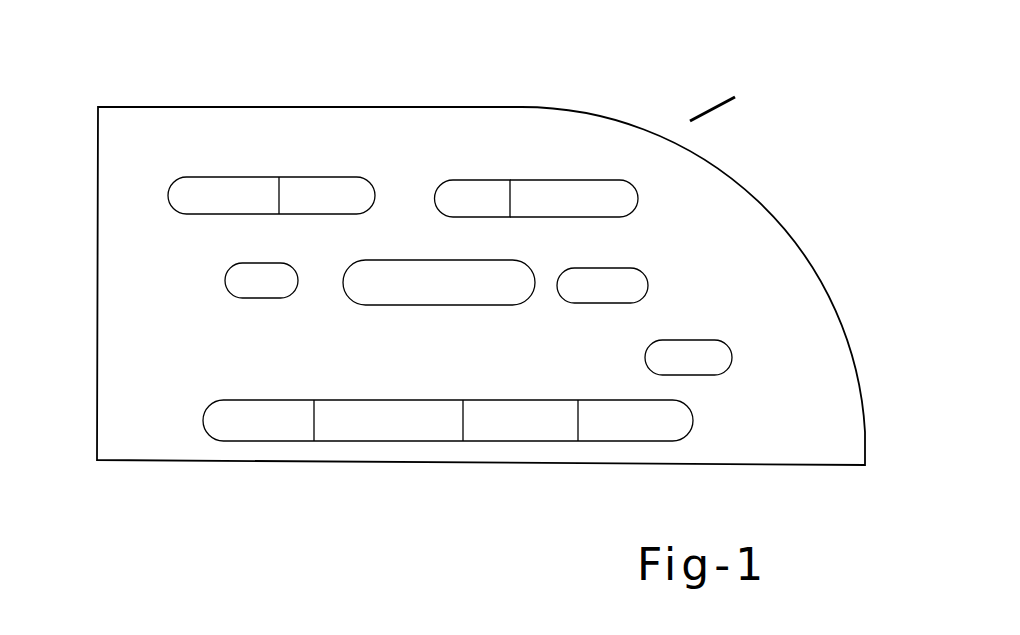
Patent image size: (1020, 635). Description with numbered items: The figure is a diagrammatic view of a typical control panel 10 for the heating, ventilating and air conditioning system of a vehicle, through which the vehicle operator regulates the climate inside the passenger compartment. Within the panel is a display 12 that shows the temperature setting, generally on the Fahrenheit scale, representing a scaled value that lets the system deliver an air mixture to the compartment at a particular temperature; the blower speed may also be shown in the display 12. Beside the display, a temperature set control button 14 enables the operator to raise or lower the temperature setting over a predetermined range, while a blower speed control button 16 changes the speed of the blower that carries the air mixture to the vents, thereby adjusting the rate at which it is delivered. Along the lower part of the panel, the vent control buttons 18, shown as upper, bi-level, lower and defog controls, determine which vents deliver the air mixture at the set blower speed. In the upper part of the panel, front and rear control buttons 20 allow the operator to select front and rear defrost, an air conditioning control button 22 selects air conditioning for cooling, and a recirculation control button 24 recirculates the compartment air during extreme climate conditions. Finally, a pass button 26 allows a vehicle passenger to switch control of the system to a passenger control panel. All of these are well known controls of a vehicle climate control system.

The control panel 10 is at (703, 92).
The display 12 is at (356, 303).
The temperature set control button 14 is at (617, 268).
The blower speed control button 16 is at (226, 270).
The vent control buttons 18 is at (521, 441).
The front and rear control buttons 20 is at (318, 177).
The air conditioning (A/C) control button 22 is at (473, 180).
The recirculation control button 24 is at (563, 178).
The pass button 26 is at (707, 340).